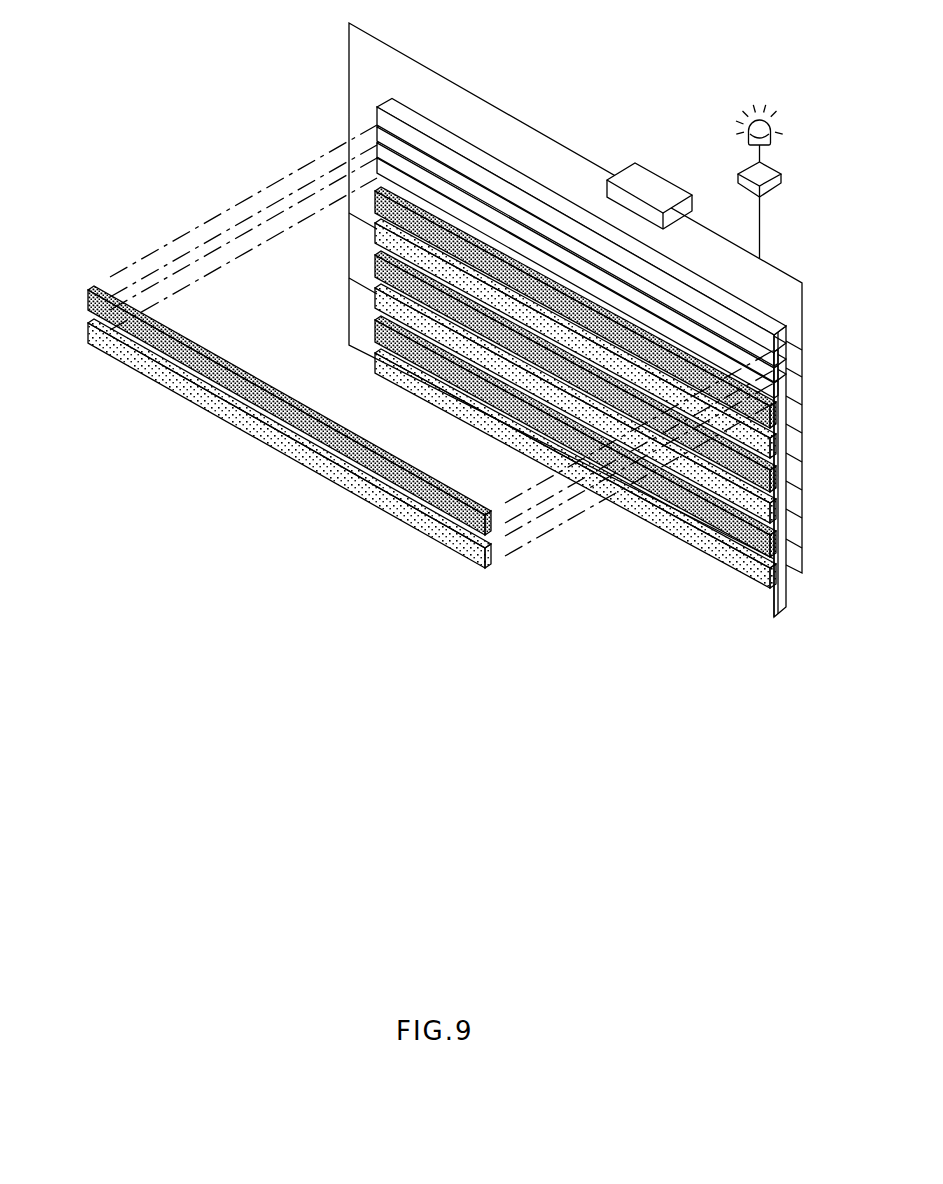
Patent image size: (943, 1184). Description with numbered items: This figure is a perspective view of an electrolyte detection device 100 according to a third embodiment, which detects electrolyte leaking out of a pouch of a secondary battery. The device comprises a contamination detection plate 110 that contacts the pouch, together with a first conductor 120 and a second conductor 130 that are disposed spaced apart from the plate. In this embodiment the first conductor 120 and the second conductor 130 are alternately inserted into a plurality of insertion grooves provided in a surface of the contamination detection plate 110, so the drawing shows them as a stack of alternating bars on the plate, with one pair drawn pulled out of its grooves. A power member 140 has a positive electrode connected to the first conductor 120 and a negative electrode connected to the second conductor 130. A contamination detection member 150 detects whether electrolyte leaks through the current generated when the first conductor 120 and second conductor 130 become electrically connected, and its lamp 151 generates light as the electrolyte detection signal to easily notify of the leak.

The electrolyte detection device 100 is at (580, 118).
The contamination detection plate 110 is at (772, 326).
The first conductor 120 is at (87, 294).
The second conductor 130 is at (87, 327).
The power member 140 is at (649, 186).
The contamination detection member 150 is at (782, 177).
The lamp 151 is at (771, 136).